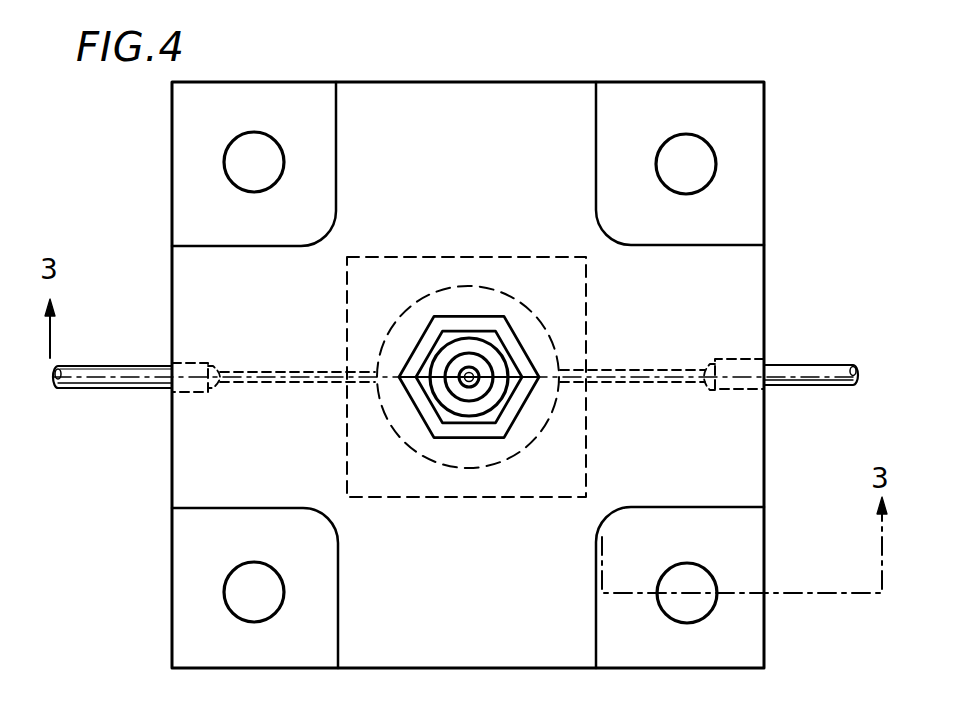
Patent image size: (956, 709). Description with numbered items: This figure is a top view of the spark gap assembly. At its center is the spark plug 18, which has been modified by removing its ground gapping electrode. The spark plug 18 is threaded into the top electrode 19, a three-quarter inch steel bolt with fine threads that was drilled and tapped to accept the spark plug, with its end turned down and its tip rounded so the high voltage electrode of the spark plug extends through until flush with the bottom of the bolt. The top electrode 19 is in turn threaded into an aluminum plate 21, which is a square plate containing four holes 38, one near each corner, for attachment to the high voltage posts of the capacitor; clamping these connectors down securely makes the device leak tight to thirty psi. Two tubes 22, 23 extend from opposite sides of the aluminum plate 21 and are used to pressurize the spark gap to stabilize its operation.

The spark plug 18 is at (503, 365).
The top electrode 19 is at (516, 413).
The aluminum plate 21 is at (753, 215).
The tube 22 is at (818, 387).
The tube 23 is at (130, 390).
The holes 38 is at (225, 160).